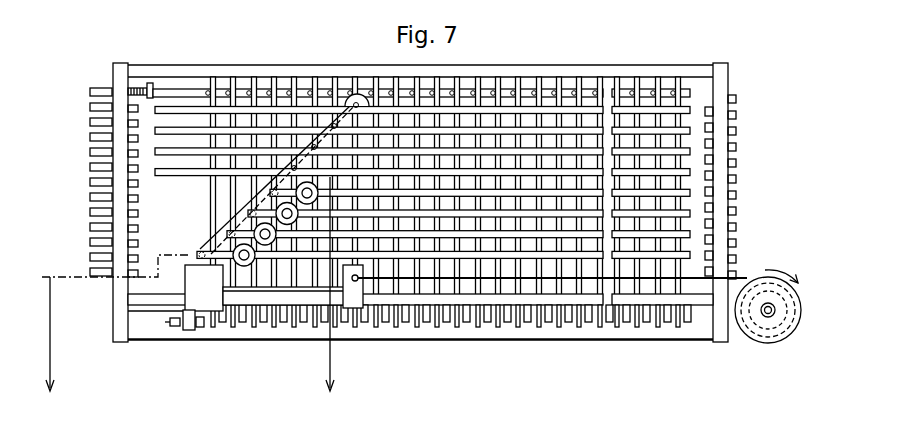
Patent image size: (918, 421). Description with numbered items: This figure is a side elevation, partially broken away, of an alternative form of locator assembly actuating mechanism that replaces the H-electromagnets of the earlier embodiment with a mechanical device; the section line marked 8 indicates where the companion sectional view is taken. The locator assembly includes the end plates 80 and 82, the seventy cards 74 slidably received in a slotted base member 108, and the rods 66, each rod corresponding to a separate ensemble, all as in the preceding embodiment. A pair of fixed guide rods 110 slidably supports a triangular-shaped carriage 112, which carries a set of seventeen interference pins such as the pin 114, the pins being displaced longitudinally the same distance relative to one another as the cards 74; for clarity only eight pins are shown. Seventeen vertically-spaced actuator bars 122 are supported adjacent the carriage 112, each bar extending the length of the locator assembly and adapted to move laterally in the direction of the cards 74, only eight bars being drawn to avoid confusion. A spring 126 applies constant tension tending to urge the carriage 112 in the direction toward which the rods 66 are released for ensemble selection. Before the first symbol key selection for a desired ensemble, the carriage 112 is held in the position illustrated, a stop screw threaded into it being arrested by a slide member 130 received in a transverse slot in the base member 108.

The rods 66 is at (88, 293).
The cards 74 is at (255, 76).
The end plate 80 is at (722, 88).
The end plate 82 is at (125, 78).
The slotted base member 108 is at (152, 330).
The fixed guide rods 110 is at (702, 300).
The triangular-shaped carriage 112 is at (214, 292).
The interference pin 114 is at (257, 190).
The actuator bars 122 is at (688, 132).
The spring 126 is at (743, 282).
The slide member 130 is at (201, 328).
The section line 8- 8 is at (189, 299).